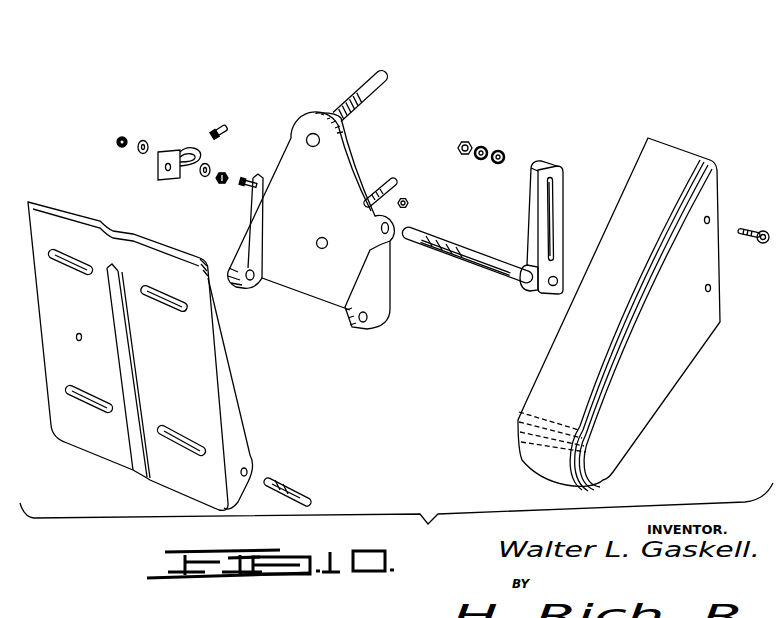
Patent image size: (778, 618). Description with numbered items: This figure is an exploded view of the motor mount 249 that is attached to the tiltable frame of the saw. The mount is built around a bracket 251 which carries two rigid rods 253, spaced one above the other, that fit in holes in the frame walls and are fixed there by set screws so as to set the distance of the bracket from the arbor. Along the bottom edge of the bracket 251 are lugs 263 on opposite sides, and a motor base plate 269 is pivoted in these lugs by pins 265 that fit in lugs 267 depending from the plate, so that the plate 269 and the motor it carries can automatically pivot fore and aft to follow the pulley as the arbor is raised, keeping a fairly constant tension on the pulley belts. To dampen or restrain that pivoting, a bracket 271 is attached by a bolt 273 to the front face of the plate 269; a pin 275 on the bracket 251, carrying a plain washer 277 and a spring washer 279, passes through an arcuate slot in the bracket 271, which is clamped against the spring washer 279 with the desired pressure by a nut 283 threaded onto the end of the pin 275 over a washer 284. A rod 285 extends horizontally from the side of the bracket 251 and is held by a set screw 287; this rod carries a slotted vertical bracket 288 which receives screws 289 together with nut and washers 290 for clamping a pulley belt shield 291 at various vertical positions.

The motor mount 249 is at (292, 88).
The bracket 251 is at (348, 160).
The rigid rods 253 is at (382, 84).
The lugs 263 is at (345, 313).
The pins 265 is at (288, 485).
The lugs 267 is at (248, 453).
The motor base plate 269 is at (229, 380).
The bracket 271 is at (180, 152).
The bolt 273 is at (227, 125).
The pin 275 is at (248, 178).
The plain washer 277 is at (219, 187).
The spring washer 279 is at (202, 180).
The nut 283 is at (116, 142).
The washer 284 is at (147, 156).
The rod 285 is at (448, 247).
The set screw 287 is at (412, 203).
The slotted vertical bracket 288 is at (560, 192).
The screws 289 is at (768, 210).
The nut and washers 290 is at (467, 140).
The pulley belt shield 291 is at (663, 378).